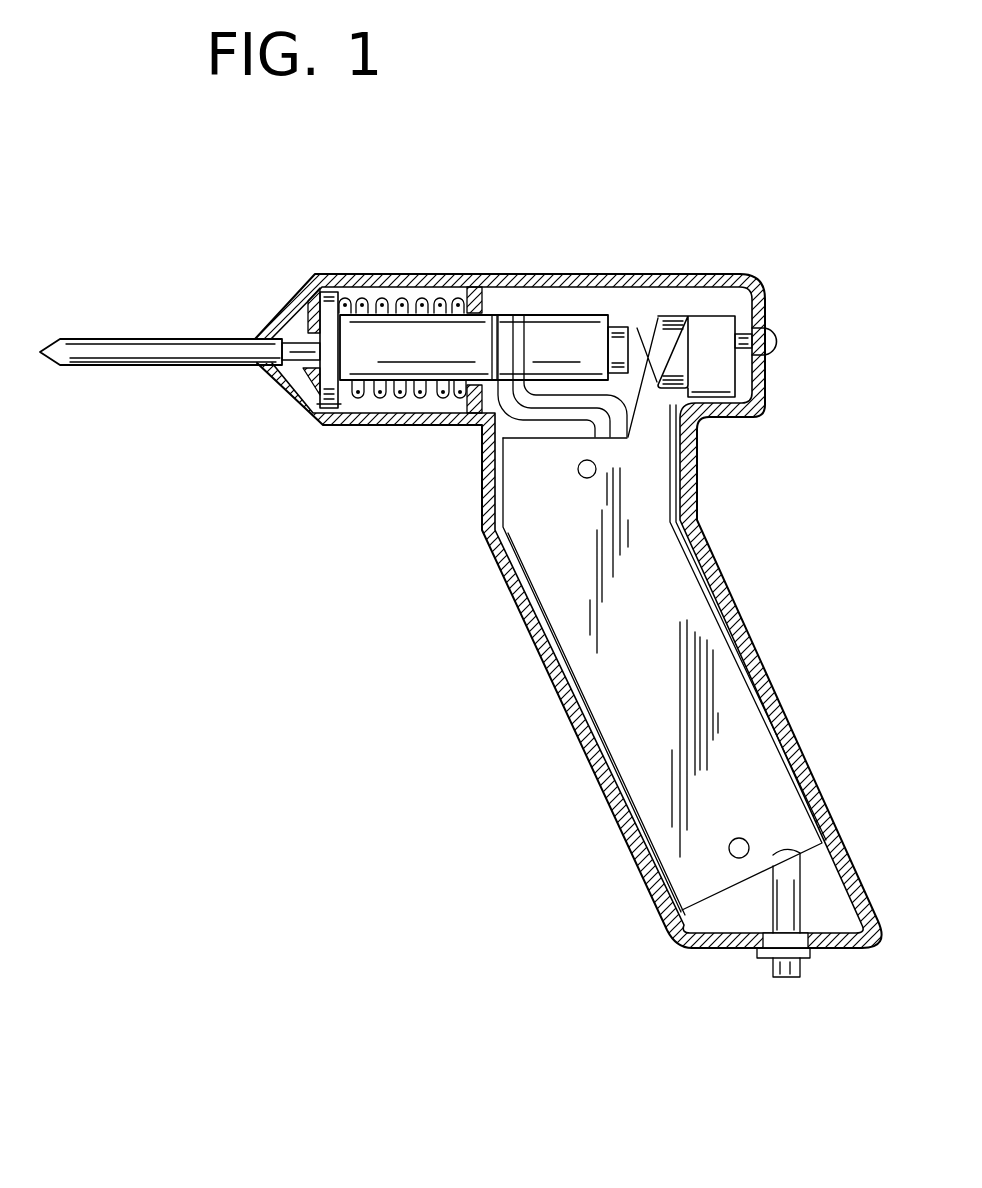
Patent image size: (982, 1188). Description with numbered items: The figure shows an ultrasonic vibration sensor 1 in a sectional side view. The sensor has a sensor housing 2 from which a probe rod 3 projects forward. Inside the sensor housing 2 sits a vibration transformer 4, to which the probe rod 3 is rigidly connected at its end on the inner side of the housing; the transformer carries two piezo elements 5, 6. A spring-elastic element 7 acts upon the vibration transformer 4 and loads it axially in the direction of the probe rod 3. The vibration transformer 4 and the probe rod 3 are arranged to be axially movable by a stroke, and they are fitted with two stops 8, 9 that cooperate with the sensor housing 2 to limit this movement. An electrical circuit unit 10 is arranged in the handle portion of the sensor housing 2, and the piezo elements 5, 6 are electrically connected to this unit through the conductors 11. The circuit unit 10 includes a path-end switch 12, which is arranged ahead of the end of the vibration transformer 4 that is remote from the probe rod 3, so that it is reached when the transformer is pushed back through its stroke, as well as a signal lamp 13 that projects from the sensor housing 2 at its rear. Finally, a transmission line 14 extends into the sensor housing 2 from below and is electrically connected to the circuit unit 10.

The ultrasonic vibration sensor 1 is at (563, 700).
The sensor housing 2 is at (598, 765).
The probe rod 3 is at (110, 360).
The vibration transformer 4 is at (586, 335).
The piezo element 5 is at (498, 315).
The piezo element 6 is at (513, 315).
The spring-elastic element 7 is at (384, 300).
The stop 8 is at (328, 410).
The stop 9 is at (271, 388).
The electrical circuit unit 10 is at (680, 573).
The conductors 11 is at (576, 398).
The path-end switch 12 is at (679, 330).
The signal lamp 13 is at (777, 342).
The transmission line 14 is at (800, 975).